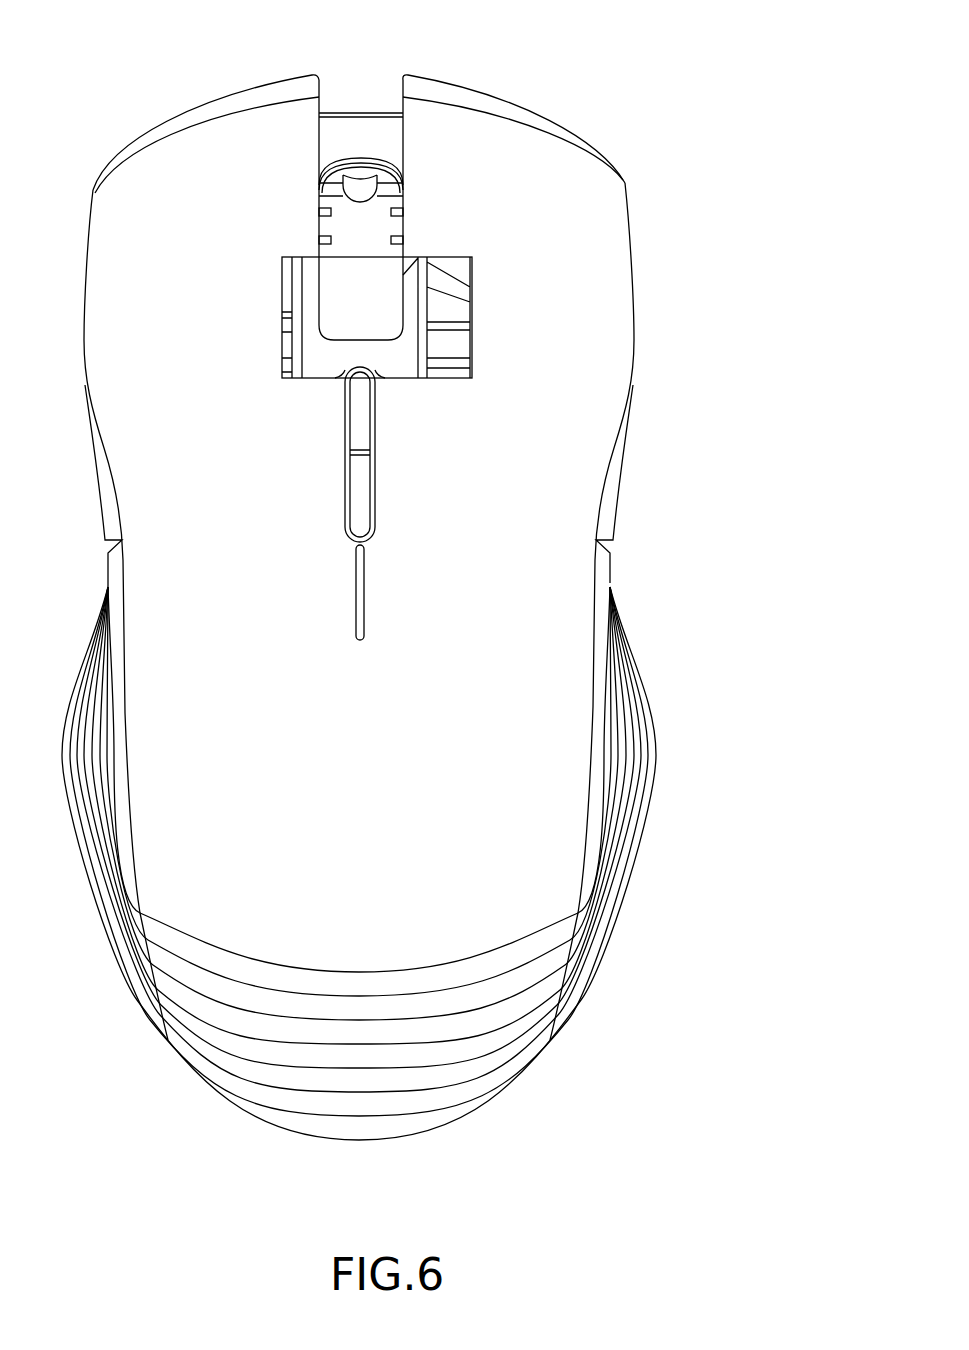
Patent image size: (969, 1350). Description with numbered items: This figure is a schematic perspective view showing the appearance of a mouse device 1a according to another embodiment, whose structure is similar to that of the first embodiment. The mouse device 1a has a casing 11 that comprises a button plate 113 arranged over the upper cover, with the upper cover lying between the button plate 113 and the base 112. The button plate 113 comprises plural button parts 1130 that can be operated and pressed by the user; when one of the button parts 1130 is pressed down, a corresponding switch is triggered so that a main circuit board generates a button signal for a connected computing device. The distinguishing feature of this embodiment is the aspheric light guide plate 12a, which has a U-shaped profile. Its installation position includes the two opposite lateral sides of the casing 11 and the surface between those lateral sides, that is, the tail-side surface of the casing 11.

The mouse device 1a is at (545, 32).
The casing 11 is at (644, 161).
The button parts 1130 is at (218, 155).
The button plate 113 is at (494, 514).
The aspheric light guide plate 12a is at (605, 925).
The base 112 is at (397, 1123).